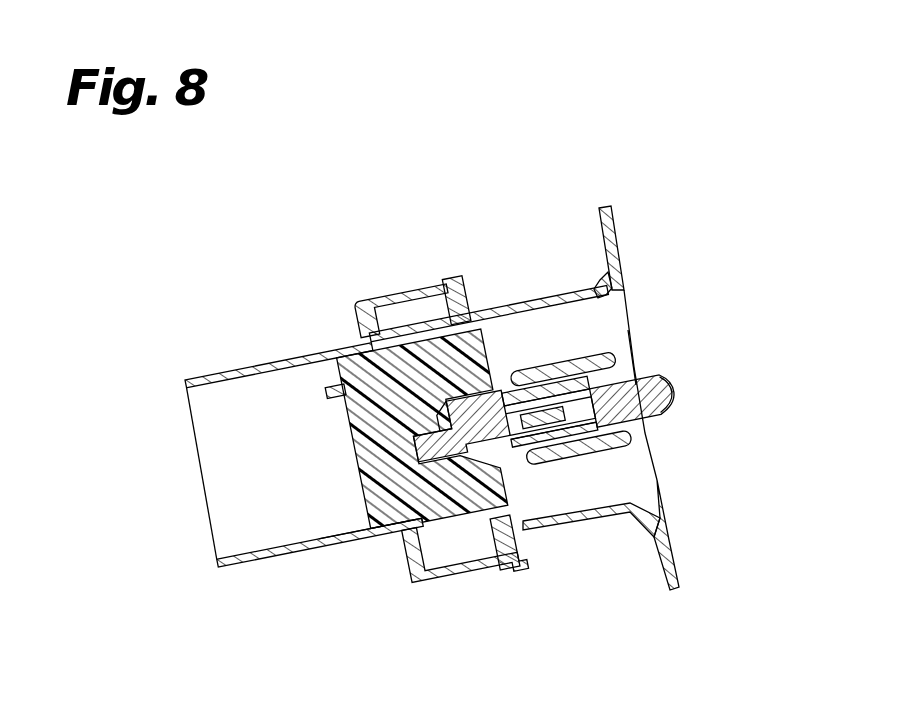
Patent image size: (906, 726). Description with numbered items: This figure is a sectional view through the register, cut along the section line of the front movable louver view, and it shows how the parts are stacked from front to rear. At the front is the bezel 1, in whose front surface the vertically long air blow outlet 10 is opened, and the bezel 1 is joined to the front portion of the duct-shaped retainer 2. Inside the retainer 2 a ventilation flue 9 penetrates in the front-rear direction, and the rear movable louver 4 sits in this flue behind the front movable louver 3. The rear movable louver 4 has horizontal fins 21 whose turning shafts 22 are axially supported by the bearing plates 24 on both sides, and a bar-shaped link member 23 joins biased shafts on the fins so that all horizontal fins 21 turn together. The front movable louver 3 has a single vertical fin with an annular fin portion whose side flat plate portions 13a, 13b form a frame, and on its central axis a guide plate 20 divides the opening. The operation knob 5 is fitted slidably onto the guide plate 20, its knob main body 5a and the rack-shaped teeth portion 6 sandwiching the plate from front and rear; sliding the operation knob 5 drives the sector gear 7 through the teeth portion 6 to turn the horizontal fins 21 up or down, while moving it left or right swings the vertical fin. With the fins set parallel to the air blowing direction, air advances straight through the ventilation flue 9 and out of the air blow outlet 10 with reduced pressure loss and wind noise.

The bezel 1 is at (613, 230).
The retainer 2 is at (262, 365).
The front movable louver 3 is at (597, 345).
The rear movable louver 4 is at (353, 513).
The operation knob 5 is at (663, 377).
The knob main body 5a is at (660, 418).
The teeth portion 6 is at (500, 447).
The sector gear 7 is at (445, 405).
The ventilation flue 9 is at (221, 468).
The air blow outlet 10 is at (630, 338).
The flat plate portion 13a is at (573, 365).
The flat plate portion 13b is at (600, 440).
The guide plate 20 is at (527, 377).
The horizontal fins 21 is at (373, 478).
The turning shafts 22 is at (385, 305).
The link member 23 is at (333, 387).
The bearing plates 24 is at (427, 300).